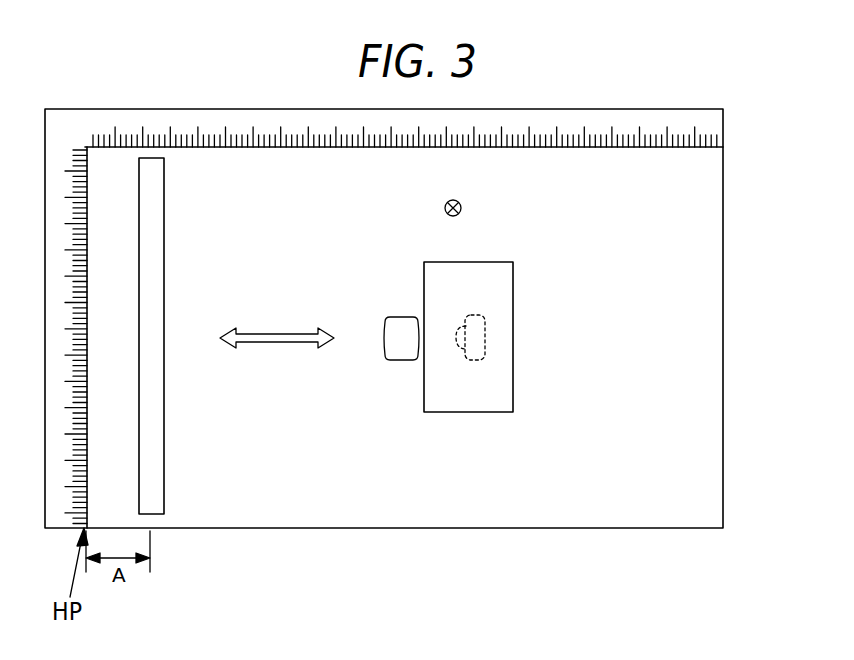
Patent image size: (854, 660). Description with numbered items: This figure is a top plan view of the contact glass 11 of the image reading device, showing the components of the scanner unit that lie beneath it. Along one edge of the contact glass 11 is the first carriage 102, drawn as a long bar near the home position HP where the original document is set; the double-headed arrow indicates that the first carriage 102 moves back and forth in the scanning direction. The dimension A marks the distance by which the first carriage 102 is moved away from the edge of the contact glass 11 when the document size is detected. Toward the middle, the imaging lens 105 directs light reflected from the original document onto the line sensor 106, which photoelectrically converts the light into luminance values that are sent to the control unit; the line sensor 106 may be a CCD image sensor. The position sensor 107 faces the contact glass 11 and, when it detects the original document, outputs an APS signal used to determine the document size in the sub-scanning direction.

The contact glass 11 is at (711, 321).
The first carriage 102 is at (164, 243).
The imaging lens 105 is at (402, 360).
The line sensor 106 is at (485, 333).
The position sensor 107 is at (461, 203).